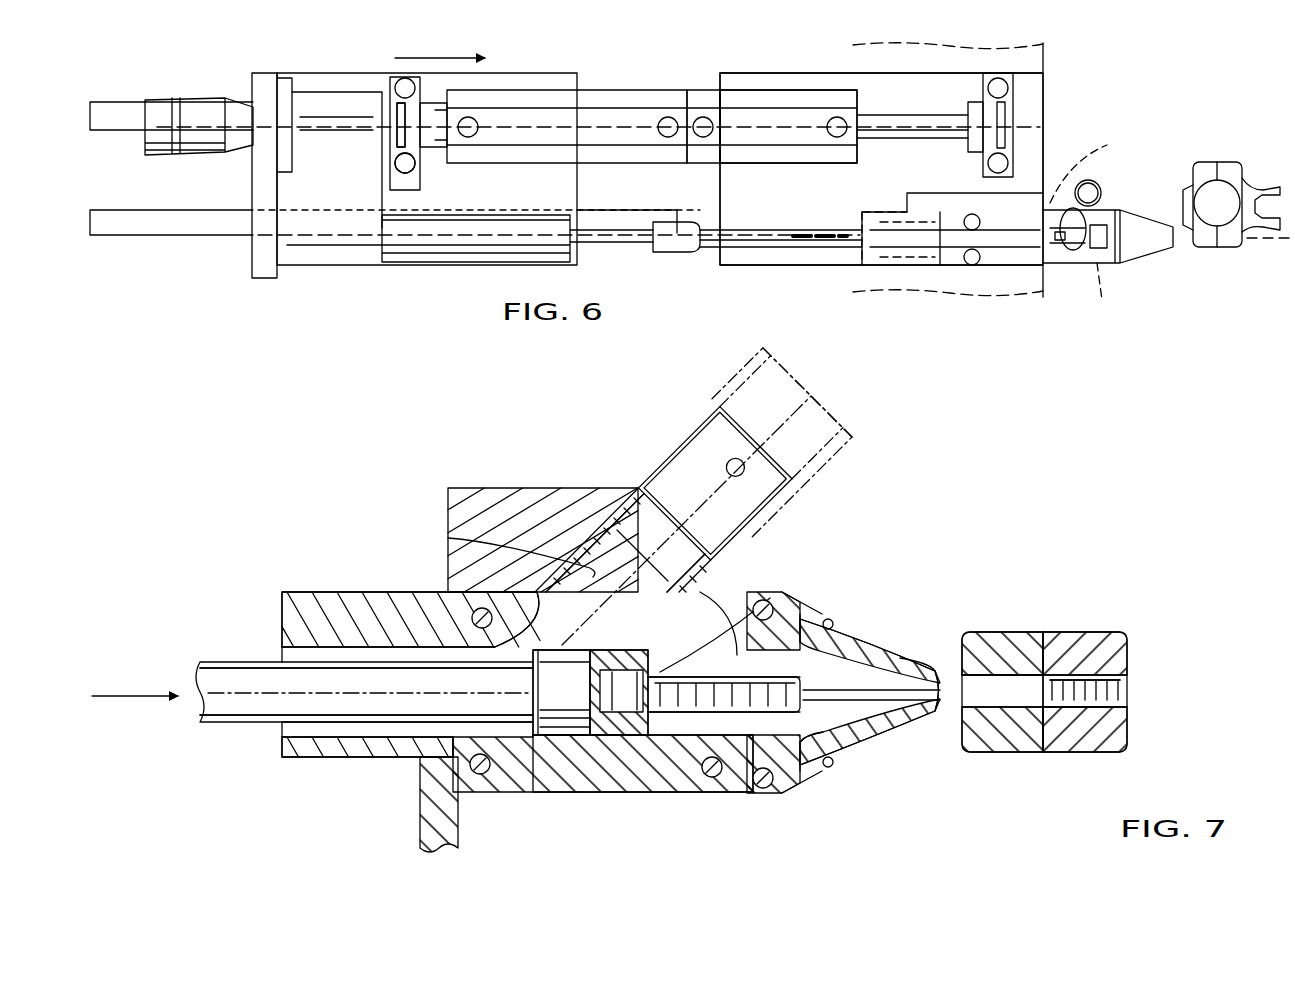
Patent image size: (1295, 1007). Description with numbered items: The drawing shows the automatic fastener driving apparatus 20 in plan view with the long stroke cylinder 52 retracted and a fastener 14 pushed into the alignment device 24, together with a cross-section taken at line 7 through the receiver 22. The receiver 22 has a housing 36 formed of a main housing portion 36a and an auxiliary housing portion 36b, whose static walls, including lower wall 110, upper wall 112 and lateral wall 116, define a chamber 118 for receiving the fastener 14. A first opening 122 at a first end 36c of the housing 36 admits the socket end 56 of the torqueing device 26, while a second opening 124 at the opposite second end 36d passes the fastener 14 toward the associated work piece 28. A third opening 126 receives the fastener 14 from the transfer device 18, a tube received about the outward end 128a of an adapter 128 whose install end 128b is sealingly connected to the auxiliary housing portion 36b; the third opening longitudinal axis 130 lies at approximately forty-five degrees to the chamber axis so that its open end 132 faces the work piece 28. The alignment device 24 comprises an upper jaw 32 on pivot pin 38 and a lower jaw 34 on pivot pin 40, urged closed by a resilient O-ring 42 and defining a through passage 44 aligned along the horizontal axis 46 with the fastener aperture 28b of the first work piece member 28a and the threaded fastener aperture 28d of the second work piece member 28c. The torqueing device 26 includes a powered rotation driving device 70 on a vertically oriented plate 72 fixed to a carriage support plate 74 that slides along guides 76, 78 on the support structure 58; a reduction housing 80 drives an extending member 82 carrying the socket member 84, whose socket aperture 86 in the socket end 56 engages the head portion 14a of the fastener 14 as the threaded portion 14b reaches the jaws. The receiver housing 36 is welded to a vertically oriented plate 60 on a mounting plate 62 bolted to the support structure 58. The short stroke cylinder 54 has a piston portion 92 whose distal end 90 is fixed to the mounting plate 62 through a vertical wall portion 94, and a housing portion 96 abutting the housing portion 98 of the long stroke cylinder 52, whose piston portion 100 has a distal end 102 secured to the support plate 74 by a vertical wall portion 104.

In FIG. 6, the section line 7 is at (802, 252).
In FIG. 6, the fastener 14 is at (1082, 281).
In FIG. 7, the fastener 14 is at (742, 662).
In FIG. 7, the head portion 14a is at (560, 669).
In FIG. 7, the threaded portion 14b is at (835, 739).
In FIG. 7, the transfer device 18 is at (853, 438).
In FIG. 6, the automatic fastener driving apparatus 20 is at (300, 303).
In FIG. 6, the receiver 22 is at (1005, 274).
In FIG. 6, the alignment device 24 is at (1149, 285).
In FIG. 7, the alignment device 24 is at (884, 779).
In FIG. 6, the torqueing device 26 is at (541, 199).
In FIG. 6, the associated work piece 28 is at (1217, 118).
In FIG. 7, the associated work piece 28 is at (1082, 608).
In FIG. 7, the first work piece member 28a is at (1003, 730).
In FIG. 7, the fastener aperture 28b is at (1012, 678).
In FIG. 7, the second work piece member 28c is at (1095, 735).
In FIG. 7, the threaded fastener aperture 28d is at (1100, 695).
In FIG. 7, the upper jaw 32 is at (910, 690).
In FIG. 7, the lower jaw 34 is at (890, 729).
In FIG. 7, the housing 36 is at (639, 802).
In FIG. 7, the main housing portion 36a is at (673, 777).
In FIG. 7, the auxiliary housing portion 36b is at (500, 487).
In FIG. 7, the first end of housing 36c is at (282, 598).
In FIG. 7, the second end of housing 36d is at (763, 794).
In FIG. 7, the pivot pin 38 is at (767, 594).
In FIG. 7, the pivot pin 40 is at (772, 783).
In FIG. 7, the resilient O-ring 42 is at (883, 654).
In FIG. 7, the through passage 44 is at (940, 636).
In FIG. 7, the horizontal axis 46 is at (545, 692).
In FIG. 6, the long stroke cylinder 52 is at (548, 120).
In FIG. 6, the short stroke cylinder 54 is at (792, 120).
In FIG. 6, the socket end 56 is at (1107, 146).
In FIG. 7, the socket end 56 is at (563, 718).
In FIG. 6, the support structure 58 is at (925, 289).
In FIG. 7, the vertically oriented plate 60 is at (420, 774).
In FIG. 6, the mounting plate 62 is at (870, 88).
In FIG. 6, the powered rotation driving device 70 is at (205, 150).
In FIG. 6, the vertically oriented plate 72 is at (262, 247).
In FIG. 6, the support plate 74 is at (432, 86).
In FIG. 6, the guide 76 is at (108, 108).
In FIG. 6, the guide 78 is at (108, 226).
In FIG. 6, the reduction housing 80 is at (336, 239).
In FIG. 6, the extending member 82 is at (624, 239).
In FIG. 6, the socket member 84 is at (780, 237).
In FIG. 7, the socket member 84 is at (228, 662).
In FIG. 7, the socket aperture 86 is at (603, 709).
In FIG. 6, the distal end of piston portion 90 is at (988, 123).
In FIG. 6, the piston portion 92 is at (937, 126).
In FIG. 6, the vertical wall portion 94 is at (1013, 162).
In FIG. 6, the housing portion 96 is at (705, 96).
In FIG. 6, the housing portion 98 is at (608, 104).
In FIG. 6, the piston portion 100 is at (438, 134).
In FIG. 6, the distal end of piston portion 102 is at (394, 132).
In FIG. 6, the vertical wall portion 104 is at (405, 173).
In FIG. 7, the lower wall 110 is at (692, 732).
In FIG. 7, the upper wall 112 is at (422, 649).
In FIG. 7, the lateral wall 116 is at (715, 632).
In FIG. 7, the chamber 118 is at (613, 788).
In FIG. 7, the first opening 122 is at (231, 676).
In FIG. 7, the second opening 124 is at (829, 619).
In FIG. 7, the third opening 126 is at (448, 538).
In FIG. 7, the adapter 128 is at (662, 457).
In FIG. 7, the outward end of adapter 128a is at (792, 505).
In FIG. 7, the install end of adapter 128b is at (677, 592).
In FIG. 7, the third opening longitudinal axis 130 is at (832, 372).
In FIG. 7, the open end of third opening 132 is at (641, 486).